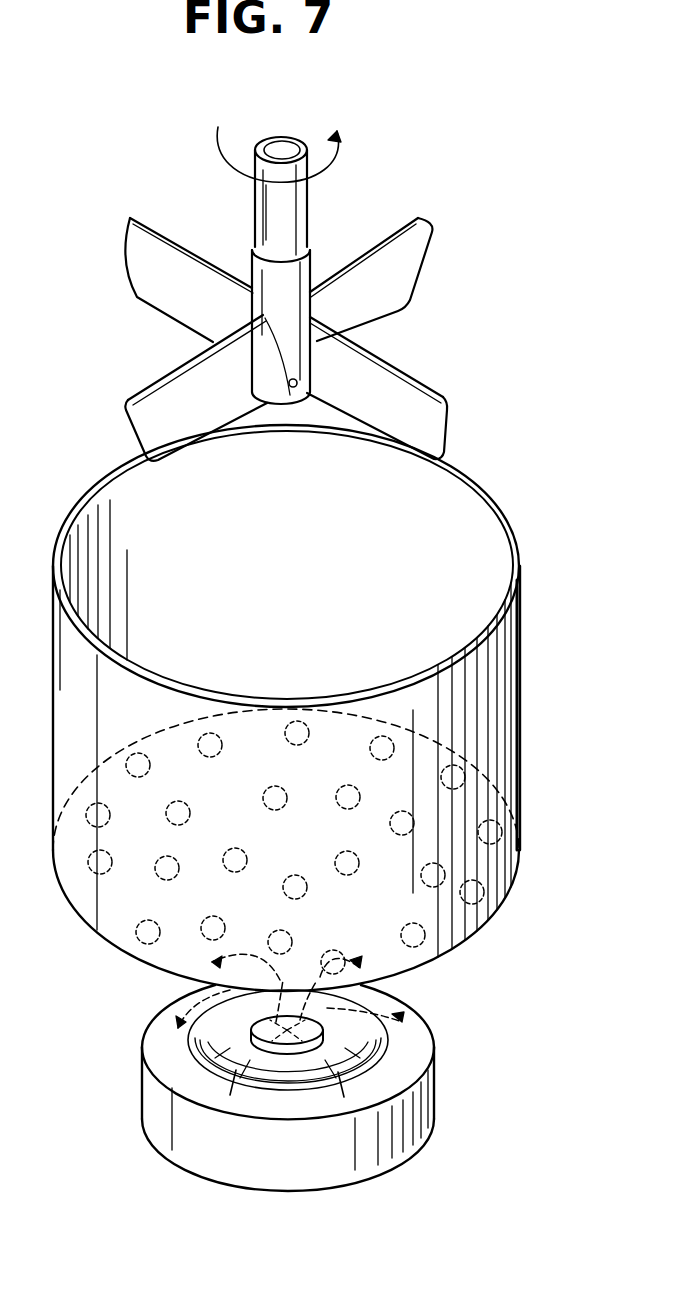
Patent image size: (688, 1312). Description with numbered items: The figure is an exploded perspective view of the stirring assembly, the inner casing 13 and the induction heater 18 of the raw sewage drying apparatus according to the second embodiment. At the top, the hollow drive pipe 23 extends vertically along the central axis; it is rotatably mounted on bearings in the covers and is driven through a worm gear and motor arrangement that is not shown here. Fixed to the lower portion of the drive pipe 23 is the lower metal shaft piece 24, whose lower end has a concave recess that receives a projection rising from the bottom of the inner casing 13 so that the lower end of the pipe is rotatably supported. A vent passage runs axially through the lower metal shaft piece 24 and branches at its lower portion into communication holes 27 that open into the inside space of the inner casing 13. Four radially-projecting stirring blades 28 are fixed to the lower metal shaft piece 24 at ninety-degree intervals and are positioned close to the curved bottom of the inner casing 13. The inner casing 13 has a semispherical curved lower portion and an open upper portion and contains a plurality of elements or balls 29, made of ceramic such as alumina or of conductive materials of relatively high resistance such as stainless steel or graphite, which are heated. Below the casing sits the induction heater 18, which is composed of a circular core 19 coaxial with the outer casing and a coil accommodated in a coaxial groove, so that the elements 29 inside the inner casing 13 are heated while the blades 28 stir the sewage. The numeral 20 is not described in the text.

The inner casing 13 is at (522, 630).
The induction heater 18 is at (452, 1080).
The core 19 is at (202, 1158).
The base top plate 20 is at (205, 1040).
The hollow drive pipe 23 is at (257, 211).
The lower metal shaft piece 24 is at (300, 272).
The communication holes 27 is at (297, 407).
The stirring blades 28 is at (134, 252).
The dielectric elements or balls 29 is at (270, 786).